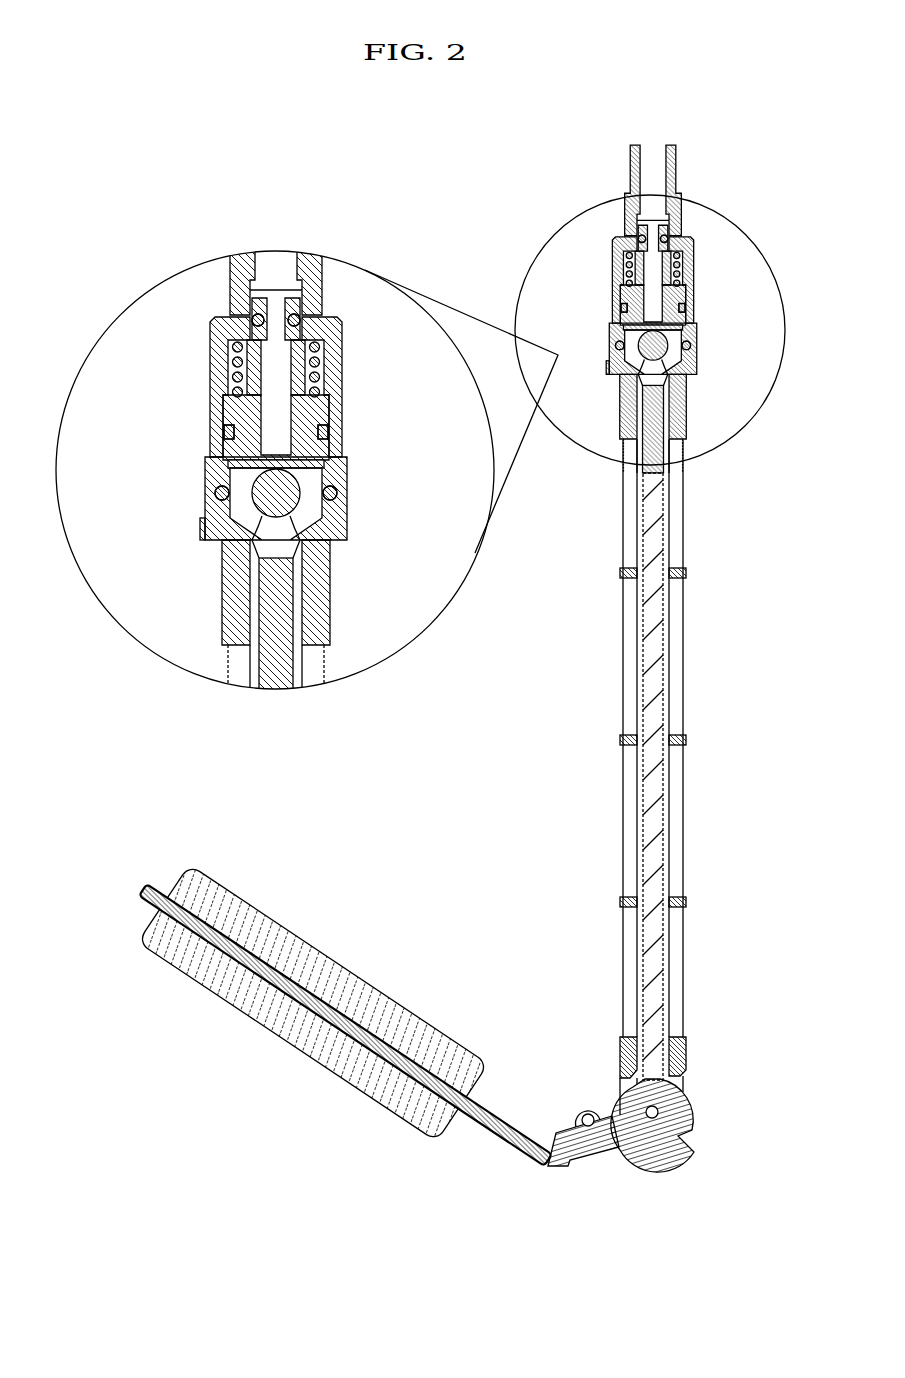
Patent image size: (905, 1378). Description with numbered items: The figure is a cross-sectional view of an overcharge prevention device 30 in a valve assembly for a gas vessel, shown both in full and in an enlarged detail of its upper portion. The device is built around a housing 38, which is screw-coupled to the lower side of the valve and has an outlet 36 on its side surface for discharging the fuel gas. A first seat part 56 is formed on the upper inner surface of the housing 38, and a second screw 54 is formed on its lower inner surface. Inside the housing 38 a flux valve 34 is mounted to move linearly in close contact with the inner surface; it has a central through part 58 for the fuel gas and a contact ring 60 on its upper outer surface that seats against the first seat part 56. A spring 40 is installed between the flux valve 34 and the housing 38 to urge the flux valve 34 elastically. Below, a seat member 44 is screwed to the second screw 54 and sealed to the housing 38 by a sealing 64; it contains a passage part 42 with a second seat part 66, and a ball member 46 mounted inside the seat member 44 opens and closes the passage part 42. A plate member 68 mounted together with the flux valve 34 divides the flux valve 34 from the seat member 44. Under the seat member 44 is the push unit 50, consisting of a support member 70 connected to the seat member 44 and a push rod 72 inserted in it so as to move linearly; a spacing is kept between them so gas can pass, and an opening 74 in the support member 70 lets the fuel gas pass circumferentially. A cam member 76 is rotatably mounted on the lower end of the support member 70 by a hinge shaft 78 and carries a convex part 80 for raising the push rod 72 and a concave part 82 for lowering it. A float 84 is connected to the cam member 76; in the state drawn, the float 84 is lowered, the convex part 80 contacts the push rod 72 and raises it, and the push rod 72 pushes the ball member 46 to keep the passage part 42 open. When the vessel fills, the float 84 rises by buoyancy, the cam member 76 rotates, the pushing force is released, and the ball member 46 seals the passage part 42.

The overcharge prevention device 30 is at (456, 346).
The flux valve 34 is at (256, 432).
The outlet 36 is at (322, 311).
The housing 38 is at (215, 385).
The spring 40 is at (317, 362).
The passage part 42 is at (258, 575).
The seat member 44 is at (215, 513).
The ball member 46 is at (290, 492).
The push unit 50 is at (464, 720).
The second screw 54 is at (203, 538).
The first seat part 56 is at (230, 290).
The through part 58 is at (248, 355).
The contact ring 60 is at (252, 318).
The sealing 64 is at (225, 490).
The second seat part 66 is at (332, 499).
The plate member 68 is at (318, 458).
The support member 70 is at (330, 628).
The push rod 72 is at (270, 630).
The opening 74 is at (680, 645).
The cam member 76 is at (660, 1150).
The hinge shaft 78 is at (665, 1112).
The convex part 80 is at (680, 1077).
The concave part 82 is at (630, 1105).
The float 84 is at (375, 992).